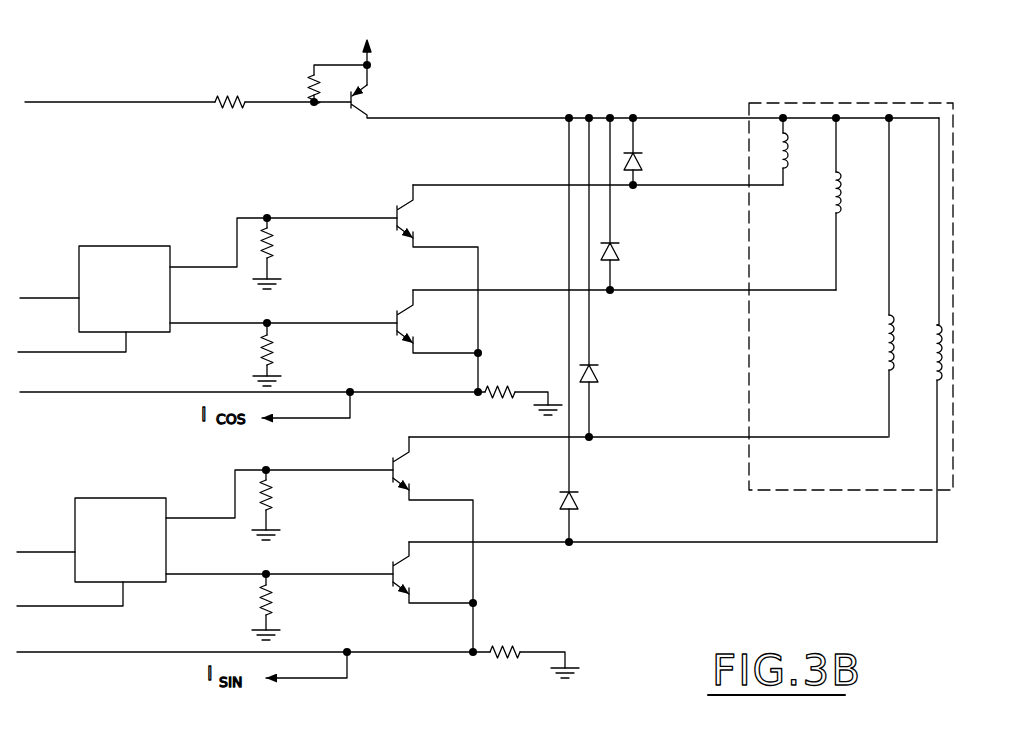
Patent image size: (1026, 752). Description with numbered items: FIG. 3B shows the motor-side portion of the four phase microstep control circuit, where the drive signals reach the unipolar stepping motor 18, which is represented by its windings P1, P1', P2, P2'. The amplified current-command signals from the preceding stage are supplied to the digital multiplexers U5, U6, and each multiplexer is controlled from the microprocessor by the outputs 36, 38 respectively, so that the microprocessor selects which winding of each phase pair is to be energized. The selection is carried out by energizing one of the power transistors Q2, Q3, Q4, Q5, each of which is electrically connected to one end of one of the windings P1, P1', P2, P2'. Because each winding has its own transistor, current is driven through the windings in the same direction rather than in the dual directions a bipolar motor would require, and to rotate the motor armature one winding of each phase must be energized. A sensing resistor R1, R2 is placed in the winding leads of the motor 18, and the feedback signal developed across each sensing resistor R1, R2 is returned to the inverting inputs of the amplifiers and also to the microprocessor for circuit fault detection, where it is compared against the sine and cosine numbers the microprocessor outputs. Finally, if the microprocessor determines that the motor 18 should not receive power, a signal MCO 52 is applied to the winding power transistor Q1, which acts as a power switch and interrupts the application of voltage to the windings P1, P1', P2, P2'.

The signal MCO 52 is at (135, 102).
The output 36 is at (80, 352).
The output 38 is at (82, 606).
The unipolar stepping motor 18 is at (953, 258).
The winding power transistor Q1 is at (623, 79).
The power transistor Q2 is at (437, 269).
The power transistor Q3 is at (439, 341).
The power transistor Q4 is at (433, 520).
The power transistor Q5 is at (435, 597).
The digital multiplexer U5 is at (147, 246).
The digital multiplexer U6 is at (137, 498).
The sensing resistor R1 is at (291, 389).
The sensing resistor R2 is at (298, 649).
The winding P1 is at (799, 151).
The winding P1' is at (854, 204).
The winding P2 is at (872, 277).
The winding P2' is at (921, 330).